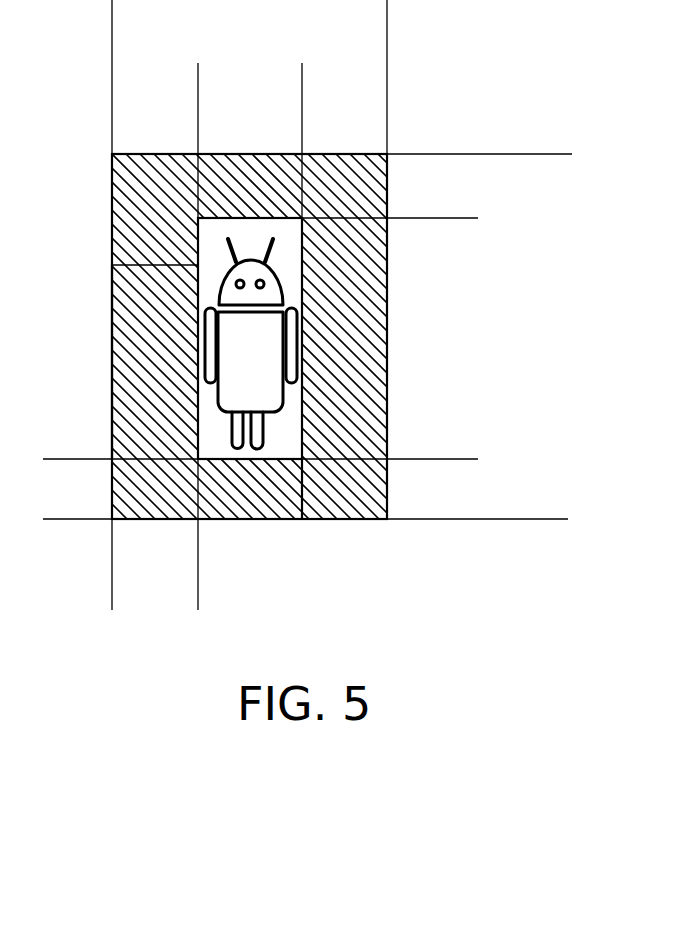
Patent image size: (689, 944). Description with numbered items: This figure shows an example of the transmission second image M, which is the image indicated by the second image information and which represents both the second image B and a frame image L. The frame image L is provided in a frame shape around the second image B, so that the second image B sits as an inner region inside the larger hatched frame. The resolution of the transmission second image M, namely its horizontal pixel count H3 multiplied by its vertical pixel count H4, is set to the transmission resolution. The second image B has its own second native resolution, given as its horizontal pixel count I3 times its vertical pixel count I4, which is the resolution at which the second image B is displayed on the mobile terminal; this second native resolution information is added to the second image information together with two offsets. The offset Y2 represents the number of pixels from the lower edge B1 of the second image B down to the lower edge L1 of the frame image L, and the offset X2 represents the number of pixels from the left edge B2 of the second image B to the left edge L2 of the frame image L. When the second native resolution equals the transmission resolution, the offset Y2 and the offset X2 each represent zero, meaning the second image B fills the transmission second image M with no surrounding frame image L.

The transmission second image M is at (112, 161).
The frame image L is at (148, 192).
The second image B is at (244, 228).
The left edge of the second image B2 is at (112, 257).
The left edge of the frame image L2 is at (112, 319).
The lower edge of the second image B1 is at (262, 460).
The lower edge of the frame image L1 is at (352, 519).
The number of pixels in the horizontal direction of the transmission second image H3 is at (387, 33).
The horizontal resolution of the second image I3 is at (302, 95).
The vertical resolution of the second image I4 is at (423, 218).
The number of pixels in the vertical direction of the transmission second image H4 is at (533, 154).
The offset Y2 is at (68, 459).
The offset X2 is at (198, 563).